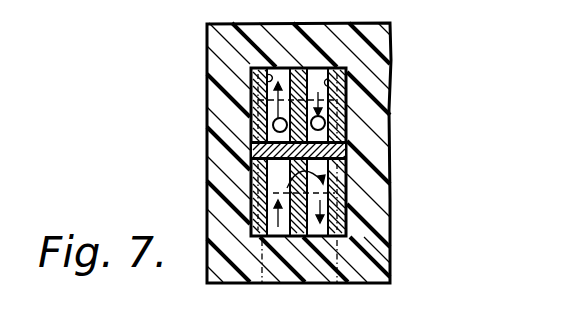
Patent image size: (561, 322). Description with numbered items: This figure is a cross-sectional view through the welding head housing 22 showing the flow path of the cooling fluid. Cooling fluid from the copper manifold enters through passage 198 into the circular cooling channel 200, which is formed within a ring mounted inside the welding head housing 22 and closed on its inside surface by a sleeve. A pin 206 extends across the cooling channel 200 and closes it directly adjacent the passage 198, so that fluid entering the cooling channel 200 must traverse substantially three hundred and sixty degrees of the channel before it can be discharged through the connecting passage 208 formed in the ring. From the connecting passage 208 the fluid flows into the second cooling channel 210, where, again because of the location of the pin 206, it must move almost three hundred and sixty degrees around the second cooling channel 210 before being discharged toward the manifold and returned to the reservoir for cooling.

The welding head housing 22 is at (382, 258).
The passage 198 is at (273, 122).
The cooling channel 200 is at (266, 78).
The pin 206 is at (256, 161).
The connecting passage 208 is at (297, 181).
The second cooling channel 210 is at (331, 89).